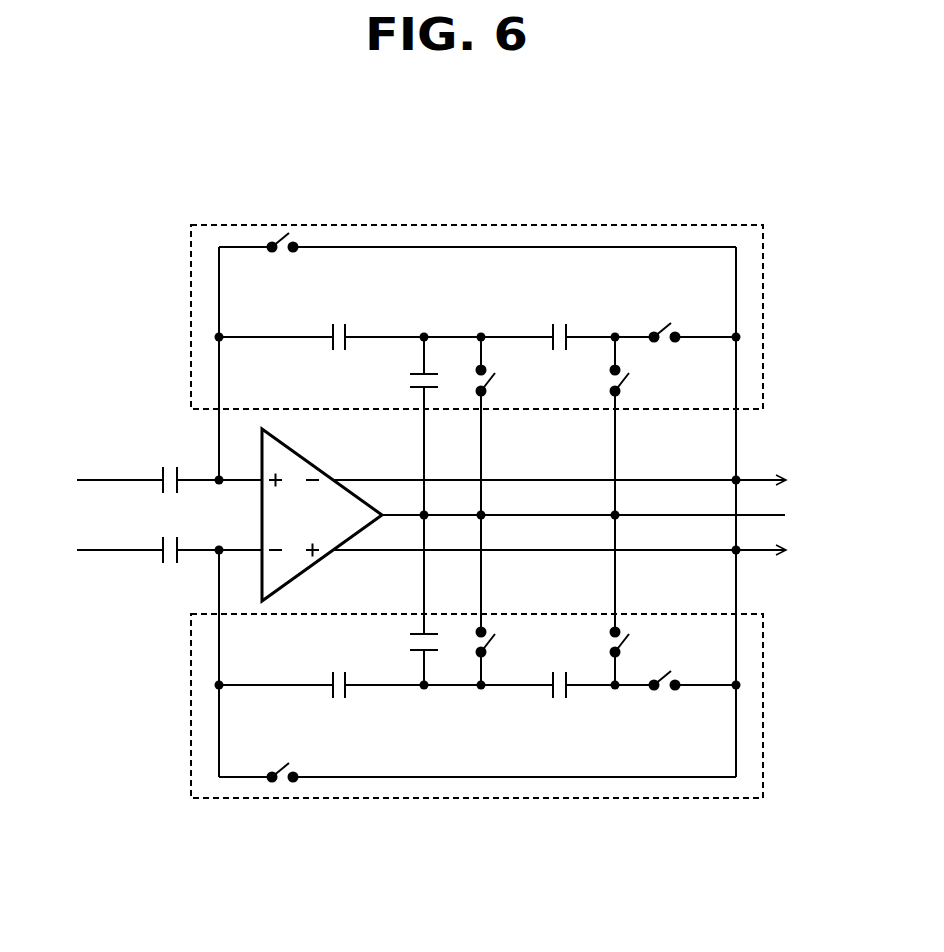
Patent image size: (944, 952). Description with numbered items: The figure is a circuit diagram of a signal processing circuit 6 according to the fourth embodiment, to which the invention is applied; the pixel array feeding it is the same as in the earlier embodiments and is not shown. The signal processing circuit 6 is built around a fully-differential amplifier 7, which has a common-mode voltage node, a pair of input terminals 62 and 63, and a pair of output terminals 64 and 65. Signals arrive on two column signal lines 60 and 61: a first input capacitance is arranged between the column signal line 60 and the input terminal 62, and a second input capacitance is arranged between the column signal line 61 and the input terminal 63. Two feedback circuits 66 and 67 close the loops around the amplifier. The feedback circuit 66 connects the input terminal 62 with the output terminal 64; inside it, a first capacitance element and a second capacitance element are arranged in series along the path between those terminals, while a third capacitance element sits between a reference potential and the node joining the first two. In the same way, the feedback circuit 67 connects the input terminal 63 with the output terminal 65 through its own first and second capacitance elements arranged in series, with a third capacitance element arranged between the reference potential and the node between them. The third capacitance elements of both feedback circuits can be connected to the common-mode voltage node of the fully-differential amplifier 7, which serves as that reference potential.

The signal processing circuit 6 is at (726, 184).
The fully-differential amplifier 7 is at (319, 470).
The column signal line 60 is at (108, 478).
The column signal line 61 is at (111, 552).
The input terminal 62 is at (238, 478).
The input terminal 63 is at (241, 552).
The output terminal 64 is at (394, 478).
The output terminal 65 is at (397, 552).
The feedback circuit 66 is at (763, 372).
The feedback circuit 67 is at (763, 737).